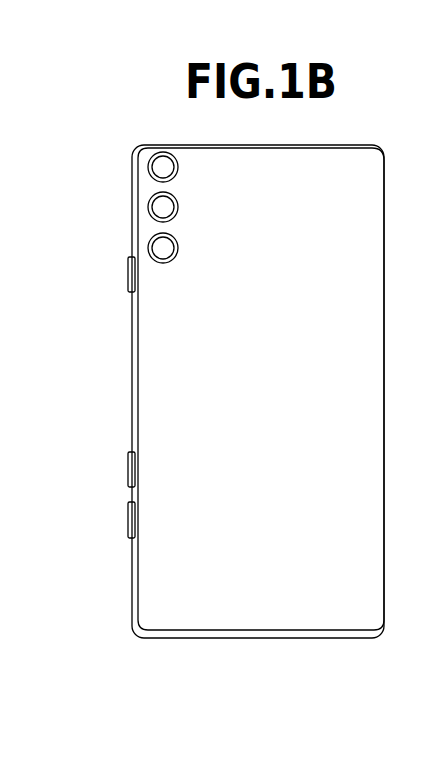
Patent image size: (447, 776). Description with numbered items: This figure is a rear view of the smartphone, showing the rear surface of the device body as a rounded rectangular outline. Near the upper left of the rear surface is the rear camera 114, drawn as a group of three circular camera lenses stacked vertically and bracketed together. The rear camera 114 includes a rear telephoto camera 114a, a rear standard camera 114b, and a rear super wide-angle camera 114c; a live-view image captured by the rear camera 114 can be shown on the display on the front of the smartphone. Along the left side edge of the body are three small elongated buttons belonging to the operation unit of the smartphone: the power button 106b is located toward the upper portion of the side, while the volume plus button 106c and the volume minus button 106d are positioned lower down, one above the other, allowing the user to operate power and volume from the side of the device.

The rear camera 114 is at (243, 207).
The rear telephoto camera 114a is at (178, 207).
The rear standard camera 114b is at (178, 167).
The rear super wide-angle camera 114c is at (178, 248).
The power button 106b is at (128, 274).
The volume plus button 106c is at (128, 469).
The volume minus button 106d is at (128, 519).